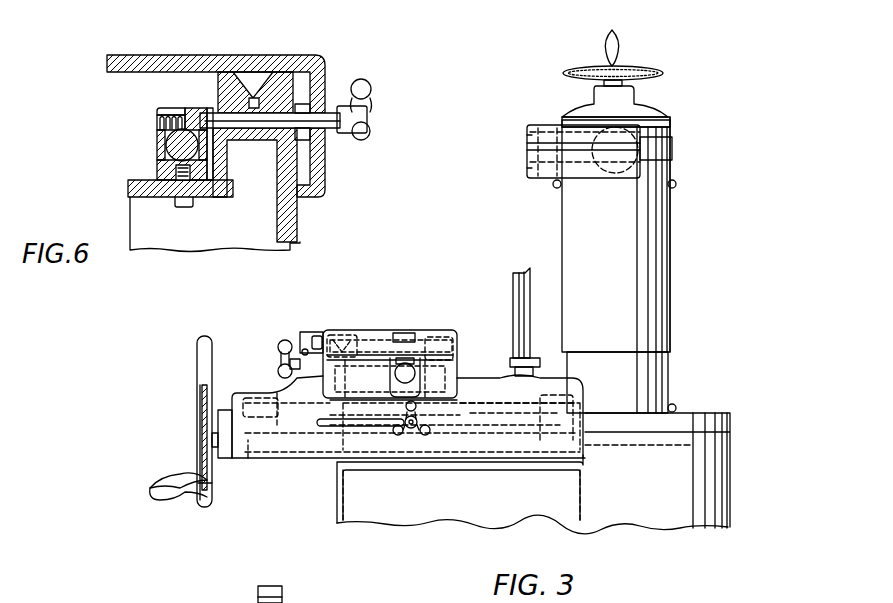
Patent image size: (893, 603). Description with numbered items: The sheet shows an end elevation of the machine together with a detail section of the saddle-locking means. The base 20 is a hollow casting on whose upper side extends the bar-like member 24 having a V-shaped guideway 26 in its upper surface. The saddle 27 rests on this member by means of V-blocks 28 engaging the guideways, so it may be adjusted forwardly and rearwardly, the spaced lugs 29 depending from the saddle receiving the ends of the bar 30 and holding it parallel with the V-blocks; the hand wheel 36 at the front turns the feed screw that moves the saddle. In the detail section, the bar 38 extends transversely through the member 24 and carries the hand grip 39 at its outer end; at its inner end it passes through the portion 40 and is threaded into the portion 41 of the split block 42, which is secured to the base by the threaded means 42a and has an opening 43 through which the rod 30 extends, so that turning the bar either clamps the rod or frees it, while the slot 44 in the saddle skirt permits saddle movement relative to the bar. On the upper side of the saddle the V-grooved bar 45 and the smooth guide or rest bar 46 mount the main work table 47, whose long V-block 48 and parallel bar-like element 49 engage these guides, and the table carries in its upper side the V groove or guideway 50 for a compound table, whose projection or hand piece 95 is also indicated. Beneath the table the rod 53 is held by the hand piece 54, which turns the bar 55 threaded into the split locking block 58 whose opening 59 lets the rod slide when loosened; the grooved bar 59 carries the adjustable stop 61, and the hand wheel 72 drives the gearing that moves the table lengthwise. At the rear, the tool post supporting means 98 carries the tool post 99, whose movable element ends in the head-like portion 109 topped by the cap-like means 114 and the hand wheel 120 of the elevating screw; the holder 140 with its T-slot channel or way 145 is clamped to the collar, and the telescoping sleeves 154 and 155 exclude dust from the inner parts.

In FIG. 6, the base 20 is at (165, 244).
In FIG. 3, the base 20 is at (475, 513).
In FIG. 6, the bar-like member 24 is at (292, 86).
In FIG. 3, the bar-like member 24 is at (340, 440).
In FIG. 6, the V-shaped guideway 26 is at (276, 80).
In FIG. 6, the saddle 27 is at (366, 33).
In FIG. 3, the saddle 27 is at (463, 326).
In FIG. 6, the V-block 28 is at (250, 82).
In FIG. 3, the V-block 28 is at (277, 390).
In FIG. 3, the lug 29 is at (257, 457).
In FIG. 6, the bar 30 is at (173, 138).
In FIG. 3, the bar 30 is at (297, 448).
In FIG. 3, the hand wheel 36 is at (202, 440).
In FIG. 6, the bar 38 is at (213, 112).
In FIG. 6, the hand grip 39 is at (372, 88).
In FIG. 3, the hand grip 39 is at (427, 433).
In FIG. 6, the portion 40 is at (197, 110).
In FIG. 6, the portion 41 is at (157, 109).
In FIG. 6, the split block 42 is at (178, 172).
In FIG. 6, the threaded means 42a is at (188, 199).
In FIG. 6, the opening 43 is at (158, 131).
In FIG. 6, the slot 44 is at (320, 136).
In FIG. 3, the slot 44 is at (380, 424).
In FIG. 3, the bar 45 is at (352, 355).
In FIG. 3, the guide or rest bar 46 is at (457, 350).
In FIG. 3, the main work table 47 is at (342, 324).
In FIG. 3, the V-block 48 is at (342, 352).
In FIG. 3, the bar-like element 49 is at (432, 332).
In FIG. 3, the V groove or guideway 50 is at (407, 333).
In FIG. 3, the rod 53 is at (400, 372).
In FIG. 3, the hand piece 54 is at (281, 345).
In FIG. 3, the bar 55 is at (327, 392).
In FIG. 3, the locking means or block 58 is at (418, 377).
In FIG. 3, the grooved bar 59 is at (317, 332).
In FIG. 3, the adjustable stop 61 is at (307, 333).
In FIG. 3, the hand wheel 72 is at (198, 350).
In FIG. 3, the projection or hand piece 95 is at (283, 588).
In FIG. 3, the tool post supporting means 98 is at (732, 467).
In FIG. 3, the tool post 99 is at (685, 272).
In FIG. 3, the head-like portion 109 is at (678, 127).
In FIG. 3, the cap-like means 114 is at (623, 98).
In FIG. 3, the hand wheel 120 is at (622, 68).
In FIG. 3, the holder 140 is at (552, 107).
In FIG. 3, the channel or way 145 is at (530, 152).
In FIG. 3, the cylindrical sleeve 154 is at (672, 365).
In FIG. 3, the sleeve 155 is at (670, 222).